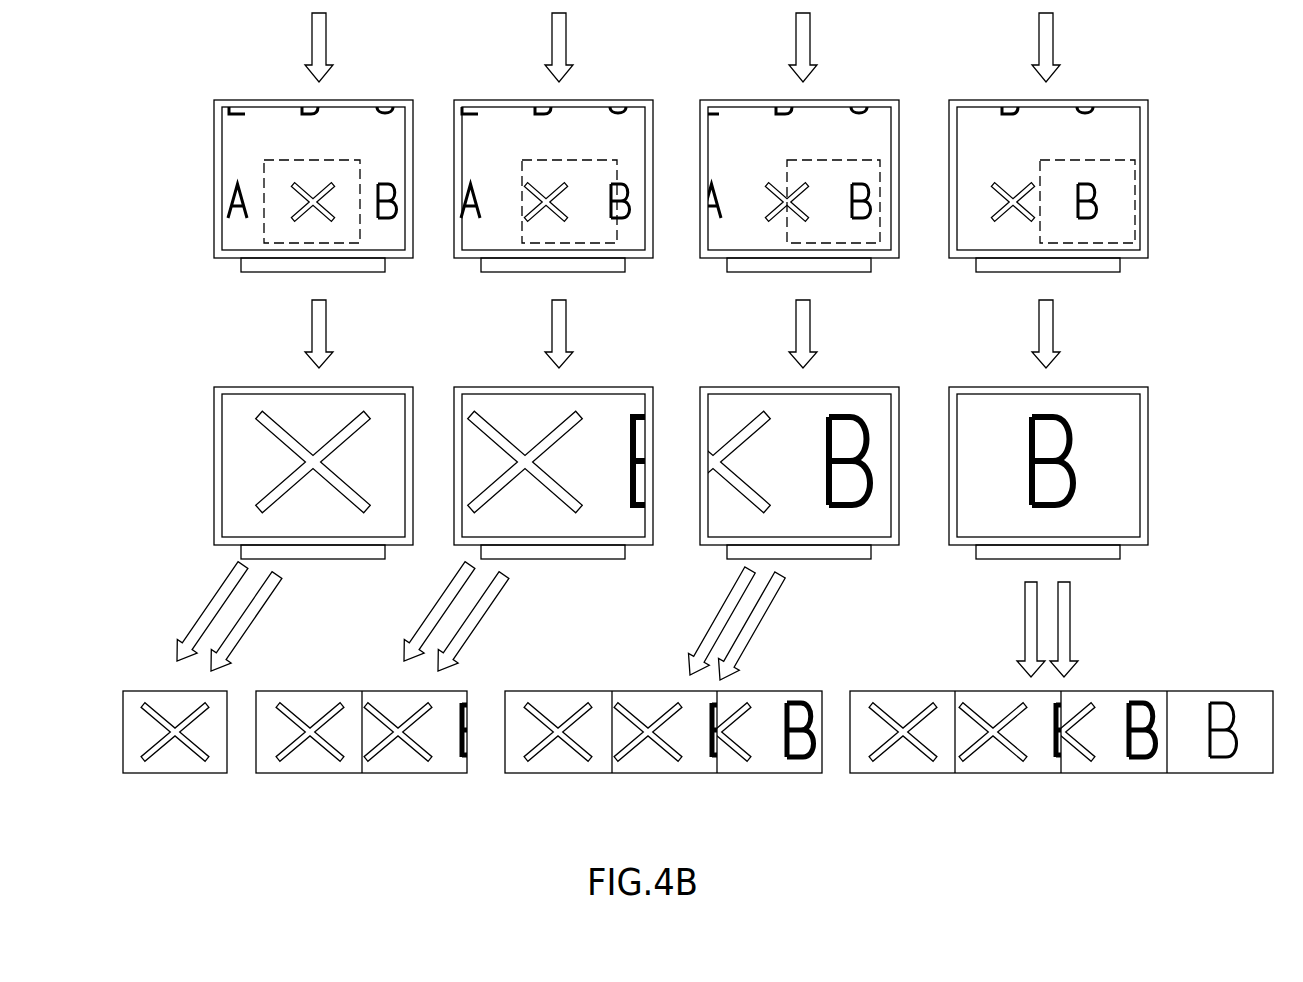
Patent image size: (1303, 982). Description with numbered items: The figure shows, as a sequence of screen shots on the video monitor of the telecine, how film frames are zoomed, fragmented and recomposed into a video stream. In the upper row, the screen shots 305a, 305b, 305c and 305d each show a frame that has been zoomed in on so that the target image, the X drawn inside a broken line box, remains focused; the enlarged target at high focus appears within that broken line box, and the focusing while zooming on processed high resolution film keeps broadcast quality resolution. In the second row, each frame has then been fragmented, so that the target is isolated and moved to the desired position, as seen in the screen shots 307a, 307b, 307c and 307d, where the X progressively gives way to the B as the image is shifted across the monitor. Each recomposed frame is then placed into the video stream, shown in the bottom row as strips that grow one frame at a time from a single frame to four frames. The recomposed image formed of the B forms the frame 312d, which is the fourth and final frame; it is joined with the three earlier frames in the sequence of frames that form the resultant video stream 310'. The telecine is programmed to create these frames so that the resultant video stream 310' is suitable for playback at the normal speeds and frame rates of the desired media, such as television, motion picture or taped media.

The screen shot 305a is at (350, 128).
The screen shot 305b is at (590, 128).
The screen shot 305c is at (836, 128).
The screen shot 305d is at (1107, 128).
The screen shot 307a is at (350, 415).
The screen shot 307b is at (590, 415).
The screen shot 307c is at (836, 415).
The screen shot 307d is at (1085, 415).
The resultant video stream 310' is at (1061, 721).
The frame 312d is at (1195, 766).